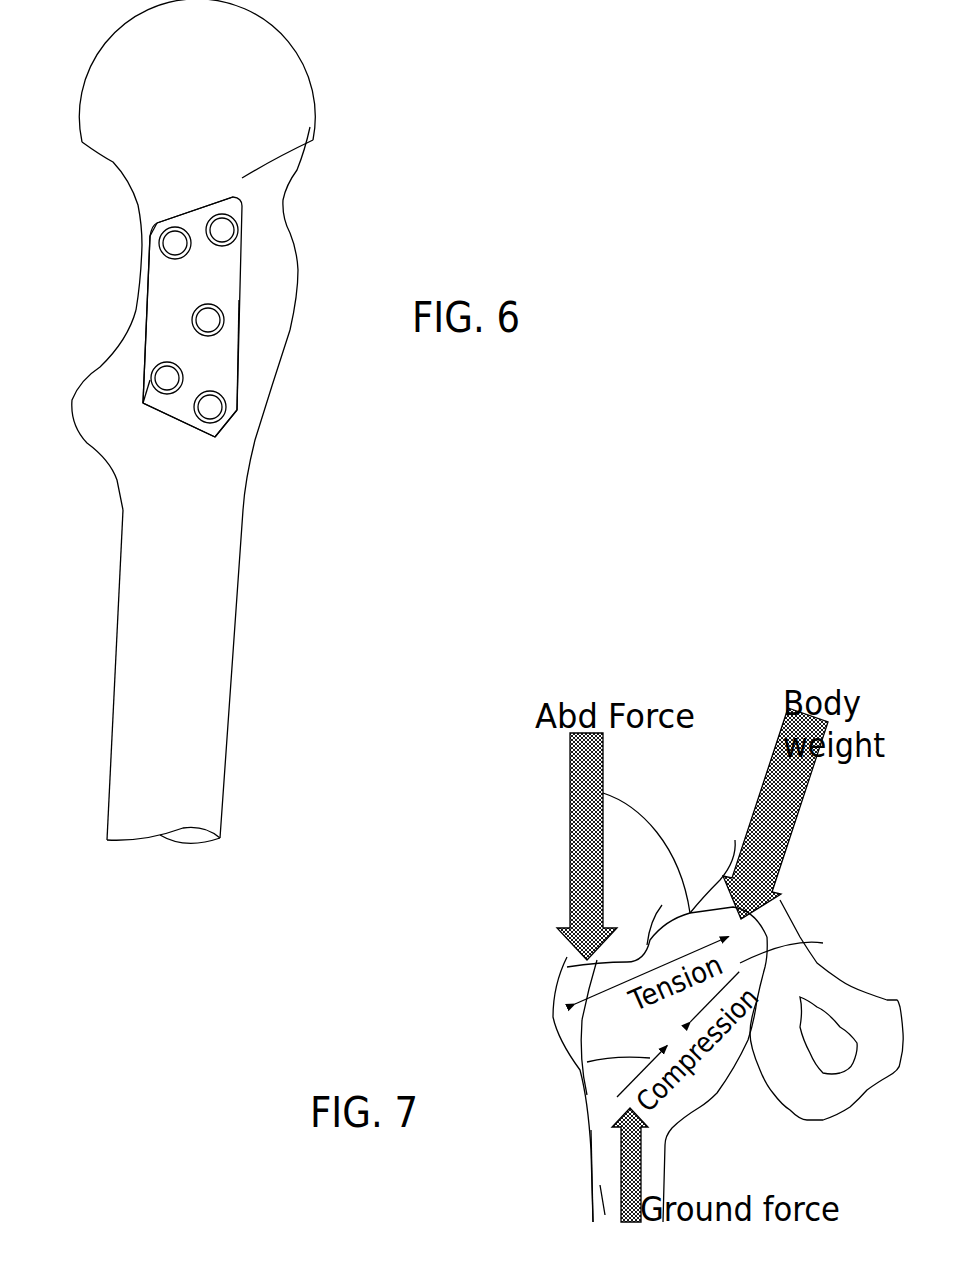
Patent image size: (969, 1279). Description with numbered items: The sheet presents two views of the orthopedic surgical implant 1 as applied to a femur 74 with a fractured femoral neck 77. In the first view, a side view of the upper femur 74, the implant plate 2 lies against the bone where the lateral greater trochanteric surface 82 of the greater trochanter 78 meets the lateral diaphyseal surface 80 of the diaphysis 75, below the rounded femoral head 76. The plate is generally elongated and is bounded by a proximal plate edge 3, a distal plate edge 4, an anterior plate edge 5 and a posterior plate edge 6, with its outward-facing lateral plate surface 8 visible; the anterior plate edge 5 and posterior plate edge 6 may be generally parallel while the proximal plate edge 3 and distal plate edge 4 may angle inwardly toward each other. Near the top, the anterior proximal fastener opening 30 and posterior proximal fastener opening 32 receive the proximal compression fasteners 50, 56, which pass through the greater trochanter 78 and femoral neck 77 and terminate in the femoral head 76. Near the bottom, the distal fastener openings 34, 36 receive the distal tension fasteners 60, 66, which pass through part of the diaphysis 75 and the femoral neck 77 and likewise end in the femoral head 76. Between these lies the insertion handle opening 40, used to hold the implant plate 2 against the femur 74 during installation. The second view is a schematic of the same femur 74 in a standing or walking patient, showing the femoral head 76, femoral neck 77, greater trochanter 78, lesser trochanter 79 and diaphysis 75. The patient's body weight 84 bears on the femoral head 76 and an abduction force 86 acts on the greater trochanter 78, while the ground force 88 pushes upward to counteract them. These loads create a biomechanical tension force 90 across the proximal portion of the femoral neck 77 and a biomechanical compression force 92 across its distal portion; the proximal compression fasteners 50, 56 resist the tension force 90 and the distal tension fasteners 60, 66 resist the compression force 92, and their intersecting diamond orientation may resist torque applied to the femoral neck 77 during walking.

In FIG. 6, the orthopedic surgical implant 1 is at (205, 180).
In FIG. 6, the implant plate 2 is at (258, 260).
In FIG. 6, the proximal plate edge 3 is at (175, 212).
In FIG. 6, the distal plate edge 4 is at (168, 428).
In FIG. 6, the anterior plate edge 5 is at (242, 345).
In FIG. 6, the posterior plate edge 6 is at (150, 330).
In FIG. 6, the lateral plate surface 8 is at (214, 298).
In FIG. 6, the anterior proximal fastener opening 30 is at (239, 226).
In FIG. 6, the posterior proximal fastener opening 32 is at (158, 245).
In FIG. 6, the distal fastener opening 34 is at (226, 405).
In FIG. 6, the distal fastener opening 36 is at (150, 380).
In FIG. 6, the insertion handle opening 40 is at (224, 318).
In FIG. 6, the proximal compression fastener 50 is at (247, 197).
In FIG. 6, the proximal compression fastener 56 is at (157, 273).
In FIG. 6, the distal tension fastener 60 is at (213, 440).
In FIG. 6, the distal tension fastener 66 is at (143, 406).
In FIG. 6, the femur 74 is at (238, 612).
In FIG. 7, the femur 74 is at (589, 1160).
In FIG. 6, the diaphysis 75 is at (200, 718).
In FIG. 7, the diaphysis 75 is at (600, 1184).
In FIG. 6, the femoral head 76 is at (252, 58).
In FIG. 7, the femoral head 76 is at (735, 840).
In FIG. 7, the femoral neck 77 is at (662, 910).
In FIG. 6, the greater trochanter 78 is at (240, 200).
In FIG. 7, the greater trochanter 78 is at (561, 977).
In FIG. 7, the lesser trochanter 79 is at (707, 1097).
In FIG. 6, the lateral diaphyseal surface 80 is at (232, 447).
In FIG. 6, the lateral greater trochanteric surface 82 is at (283, 222).
In FIG. 7, the lateral greater trochanteric surface 82 is at (552, 993).
In FIG. 7, the body weight 84 is at (808, 775).
In FIG. 7, the abduction force 86 is at (603, 768).
In FIG. 7, the ground force 88 is at (641, 1161).
In FIG. 7, the biomechanical tension force 90 is at (583, 1063).
In FIG. 7, the biomechanical compression force 92 is at (552, 1093).